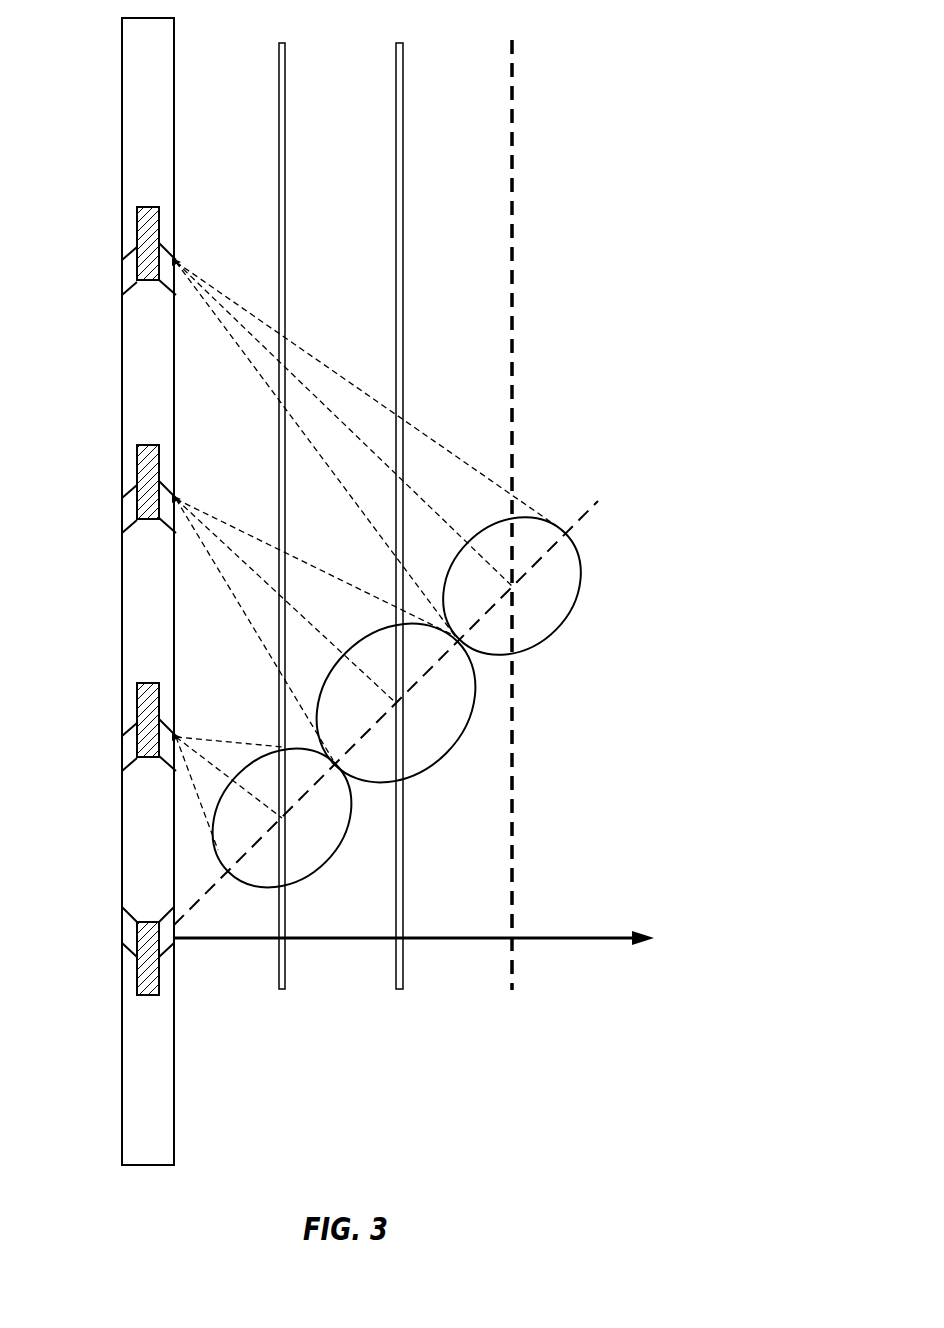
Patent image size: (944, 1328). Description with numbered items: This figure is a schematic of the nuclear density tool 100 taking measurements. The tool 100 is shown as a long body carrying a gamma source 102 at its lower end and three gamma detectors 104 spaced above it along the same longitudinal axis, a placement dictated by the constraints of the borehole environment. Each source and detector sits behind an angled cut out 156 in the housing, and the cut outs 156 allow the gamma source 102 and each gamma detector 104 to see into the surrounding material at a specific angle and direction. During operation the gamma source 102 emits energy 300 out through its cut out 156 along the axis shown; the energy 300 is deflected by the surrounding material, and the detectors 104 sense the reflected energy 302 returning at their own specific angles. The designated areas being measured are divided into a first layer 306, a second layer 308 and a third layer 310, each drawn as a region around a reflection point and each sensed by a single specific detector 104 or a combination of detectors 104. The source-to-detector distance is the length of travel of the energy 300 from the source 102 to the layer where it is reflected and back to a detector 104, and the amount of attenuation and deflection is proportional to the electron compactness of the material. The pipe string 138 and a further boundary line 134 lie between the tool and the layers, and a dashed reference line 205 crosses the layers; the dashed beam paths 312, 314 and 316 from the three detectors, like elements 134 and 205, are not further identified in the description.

The nuclear density tool 100 is at (122, 88).
The gamma source 102 is at (136, 980).
The gamma detector 104 is at (136, 219).
The second plate / interface 134 is at (399, 43).
The pipe string 138 is at (282, 43).
The cut out 156 is at (122, 277).
The reference line / boundary 205 is at (512, 40).
The energy 300 is at (202, 905).
The reflected energy 302 is at (258, 805).
The first layer 306 is at (342, 843).
The second layer 308 is at (453, 743).
The third layer 310 is at (558, 628).
The first beam 312 is at (147, 758).
The second beam 314 is at (147, 520).
The third beam 316 is at (147, 281).